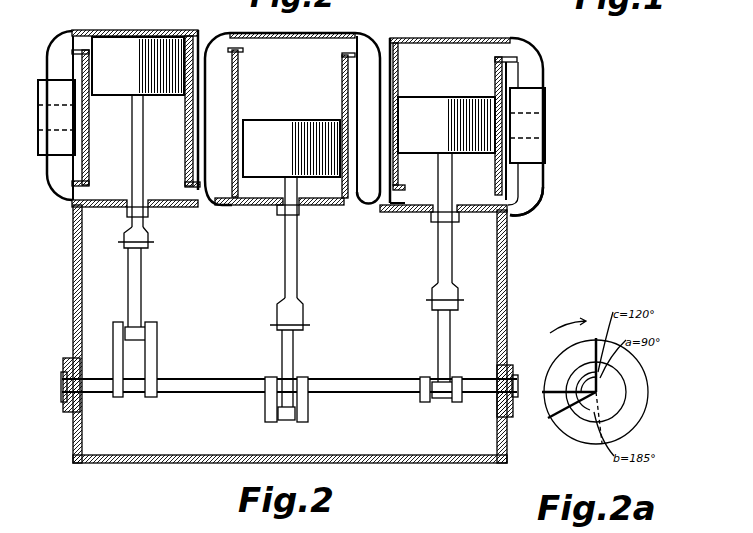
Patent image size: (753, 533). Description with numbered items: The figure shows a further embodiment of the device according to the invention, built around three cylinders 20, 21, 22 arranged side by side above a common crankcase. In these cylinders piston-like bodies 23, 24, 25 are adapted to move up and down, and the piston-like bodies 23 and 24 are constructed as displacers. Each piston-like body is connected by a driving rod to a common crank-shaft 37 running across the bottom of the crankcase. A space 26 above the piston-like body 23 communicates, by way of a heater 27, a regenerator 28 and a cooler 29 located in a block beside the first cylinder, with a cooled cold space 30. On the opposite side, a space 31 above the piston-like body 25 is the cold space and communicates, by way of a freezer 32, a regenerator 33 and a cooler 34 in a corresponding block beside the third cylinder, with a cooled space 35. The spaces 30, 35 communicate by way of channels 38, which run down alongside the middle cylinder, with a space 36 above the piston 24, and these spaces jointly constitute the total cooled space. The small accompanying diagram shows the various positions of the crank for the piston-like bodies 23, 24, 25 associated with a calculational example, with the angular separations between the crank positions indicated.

In FIG. 2, the cylinder 20 is at (192, 31).
In FIG. 2, the cylinder 21 is at (350, 63).
In FIG. 2, the cylinder 22 is at (510, 63).
In FIG. 2, the piston-like body 23 is at (143, 47).
In FIG. 2A, the piston-like body 23 is at (593, 357).
In FIG. 2, the piston-like body 24 is at (318, 52).
In FIG. 2A, the piston-like body 24 is at (558, 410).
In FIG. 2, the piston-like body 25 is at (458, 103).
In FIG. 2A, the piston-like body 25 is at (556, 392).
In FIG. 2, the space 26 is at (101, 31).
In FIG. 2, the heater 27 is at (48, 88).
In FIG. 2, the regenerator 28 is at (48, 118).
In FIG. 2, the cooler 29 is at (48, 145).
In FIG. 2, the cooled cold space 30 is at (100, 187).
In FIG. 2, the space 31 is at (430, 50).
In FIG. 2, the freezer 32 is at (540, 100).
In FIG. 2, the regenerator 33 is at (540, 124).
In FIG. 2, the cooler 34 is at (540, 148).
In FIG. 2, the cooled space 35 is at (515, 203).
In FIG. 2, the space 36 is at (312, 127).
In FIG. 2, the crank-shaft 37 is at (227, 388).
In FIG. 2, the channels 38 is at (208, 188).